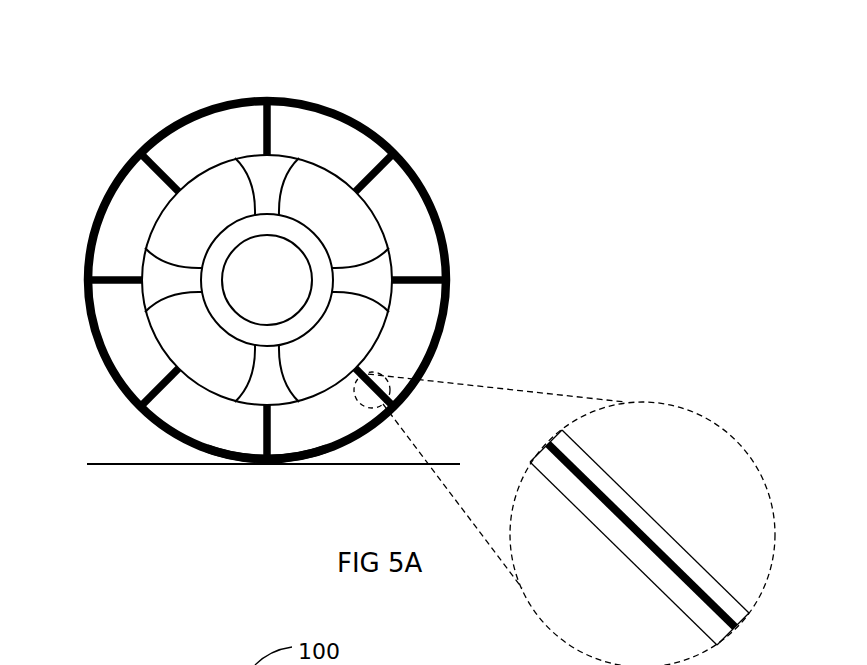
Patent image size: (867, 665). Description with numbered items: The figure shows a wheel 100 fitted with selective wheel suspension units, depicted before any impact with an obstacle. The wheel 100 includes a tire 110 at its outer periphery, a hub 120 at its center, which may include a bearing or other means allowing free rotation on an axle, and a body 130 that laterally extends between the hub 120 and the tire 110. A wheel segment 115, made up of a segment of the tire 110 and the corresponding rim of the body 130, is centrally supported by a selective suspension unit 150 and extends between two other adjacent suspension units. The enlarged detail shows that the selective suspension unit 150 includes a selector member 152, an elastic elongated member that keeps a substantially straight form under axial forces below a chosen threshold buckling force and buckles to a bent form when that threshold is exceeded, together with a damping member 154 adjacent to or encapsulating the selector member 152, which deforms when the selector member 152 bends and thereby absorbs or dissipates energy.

The wheel 100 is at (160, 70).
The tire 110 is at (341, 111).
The wheel segment 115 is at (365, 433).
The hub 120 is at (232, 270).
The body 130 is at (210, 290).
The selective wheel suspension unit 150 is at (376, 386).
The selector member 152 is at (610, 503).
The damping member 154 is at (600, 470).